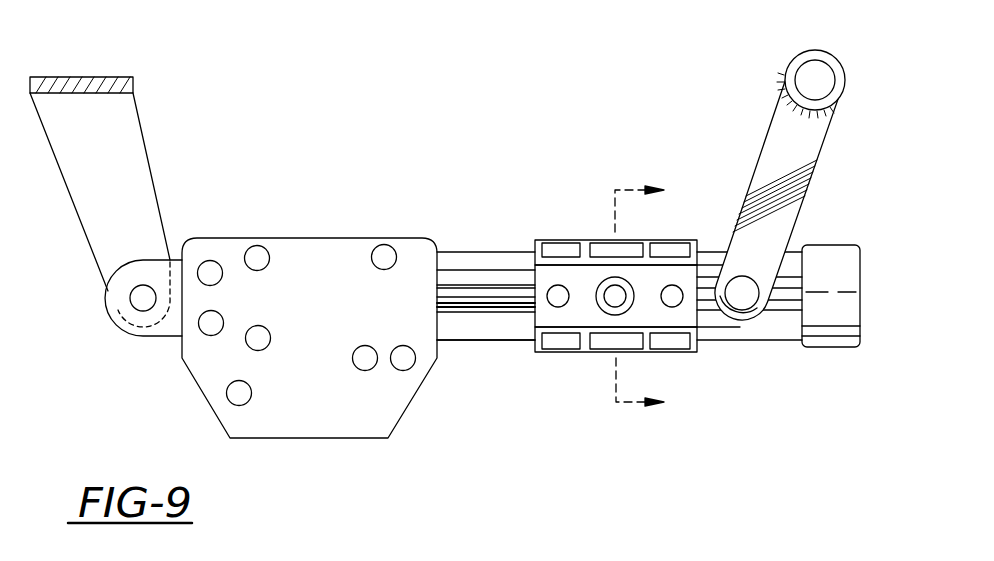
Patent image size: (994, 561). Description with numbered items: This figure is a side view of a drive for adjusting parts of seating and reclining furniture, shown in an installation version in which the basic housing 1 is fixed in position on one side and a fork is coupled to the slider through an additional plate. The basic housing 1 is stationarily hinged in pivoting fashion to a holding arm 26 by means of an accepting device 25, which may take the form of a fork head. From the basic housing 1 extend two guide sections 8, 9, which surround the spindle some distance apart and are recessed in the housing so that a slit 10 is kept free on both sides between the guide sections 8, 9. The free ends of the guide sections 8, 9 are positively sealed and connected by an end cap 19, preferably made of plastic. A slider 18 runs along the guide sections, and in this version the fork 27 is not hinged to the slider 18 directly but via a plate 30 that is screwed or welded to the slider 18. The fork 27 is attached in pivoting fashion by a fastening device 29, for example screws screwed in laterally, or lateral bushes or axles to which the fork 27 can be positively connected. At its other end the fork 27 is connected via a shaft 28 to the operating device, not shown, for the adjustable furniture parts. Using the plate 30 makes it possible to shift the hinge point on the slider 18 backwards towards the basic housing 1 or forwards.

The basic housing 1 is at (325, 421).
The guide section 8 is at (507, 258).
The guide section 9 is at (455, 327).
The slit 10 is at (463, 292).
The slider 18 is at (678, 347).
The end cap 19 is at (823, 333).
The accepting device 25 is at (164, 333).
The holding arm 26 is at (135, 155).
The fork 27 is at (768, 143).
The shaft 28 is at (790, 70).
The fastening device 29 is at (733, 290).
The plate 30 is at (703, 315).